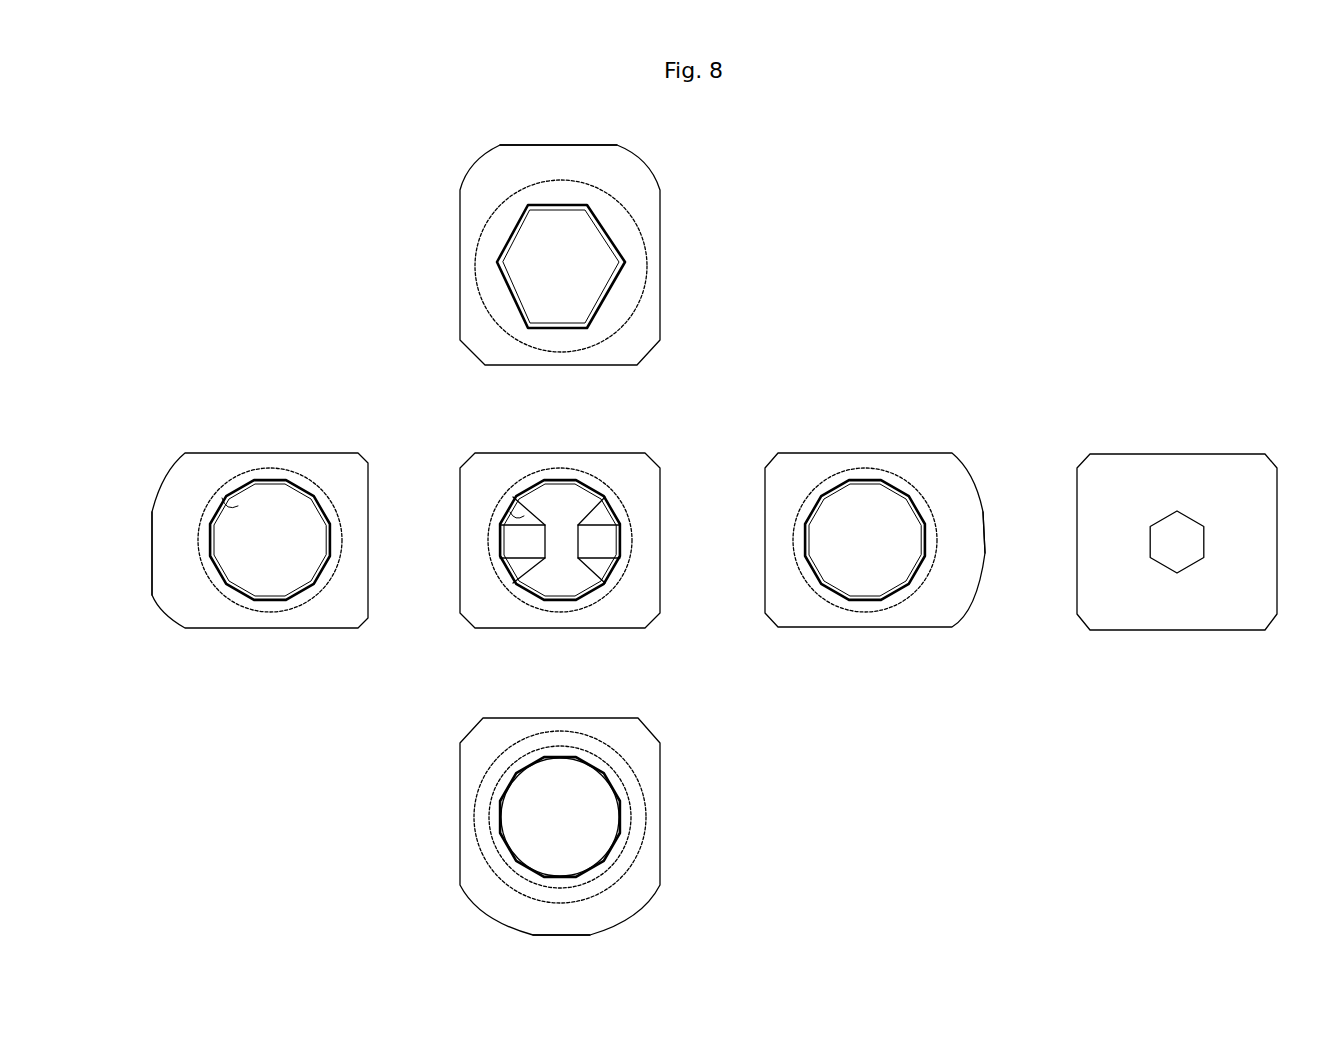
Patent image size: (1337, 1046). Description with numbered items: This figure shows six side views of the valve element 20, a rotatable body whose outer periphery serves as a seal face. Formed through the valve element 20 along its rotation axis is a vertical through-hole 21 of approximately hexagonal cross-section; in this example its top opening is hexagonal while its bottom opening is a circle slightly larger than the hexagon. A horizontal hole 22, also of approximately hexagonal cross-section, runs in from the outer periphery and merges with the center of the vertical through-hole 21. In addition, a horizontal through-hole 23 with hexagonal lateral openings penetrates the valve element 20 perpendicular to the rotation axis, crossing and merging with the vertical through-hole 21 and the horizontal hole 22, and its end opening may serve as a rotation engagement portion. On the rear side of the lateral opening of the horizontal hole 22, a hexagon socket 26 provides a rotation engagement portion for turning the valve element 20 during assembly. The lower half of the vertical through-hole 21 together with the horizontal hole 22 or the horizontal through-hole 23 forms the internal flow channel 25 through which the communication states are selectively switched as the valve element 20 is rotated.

The valve element 20 is at (643, 165).
The vertical through-hole 21 is at (578, 502).
The horizontal hole 22 is at (612, 584).
The horizontal through-hole 23 is at (233, 502).
The internal flow channel 25 is at (510, 296).
The hexagon socket 26 is at (548, 142).